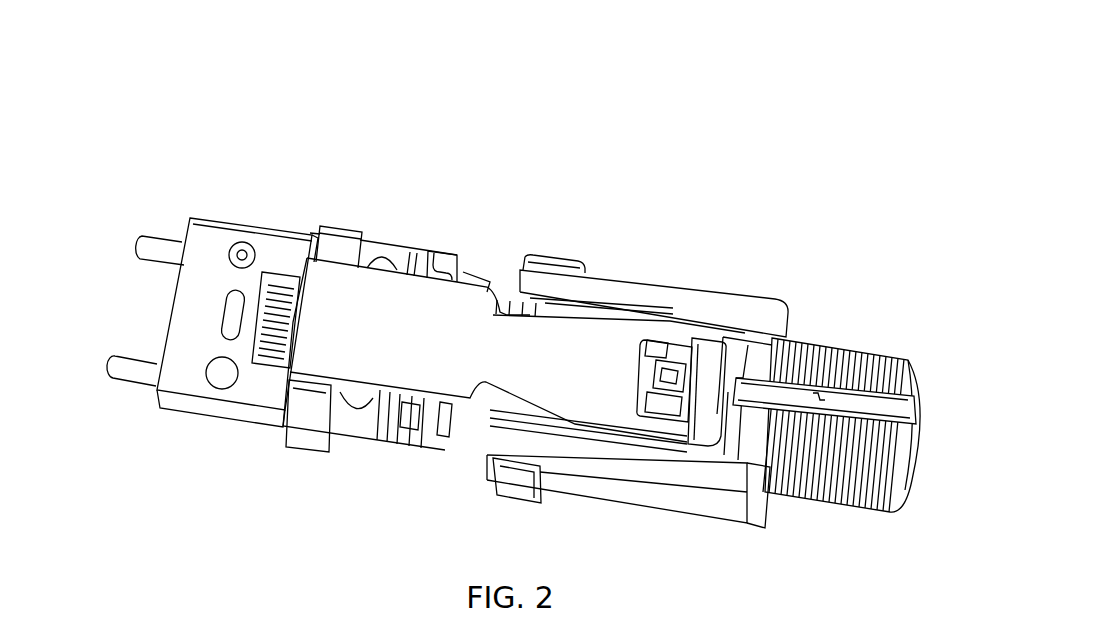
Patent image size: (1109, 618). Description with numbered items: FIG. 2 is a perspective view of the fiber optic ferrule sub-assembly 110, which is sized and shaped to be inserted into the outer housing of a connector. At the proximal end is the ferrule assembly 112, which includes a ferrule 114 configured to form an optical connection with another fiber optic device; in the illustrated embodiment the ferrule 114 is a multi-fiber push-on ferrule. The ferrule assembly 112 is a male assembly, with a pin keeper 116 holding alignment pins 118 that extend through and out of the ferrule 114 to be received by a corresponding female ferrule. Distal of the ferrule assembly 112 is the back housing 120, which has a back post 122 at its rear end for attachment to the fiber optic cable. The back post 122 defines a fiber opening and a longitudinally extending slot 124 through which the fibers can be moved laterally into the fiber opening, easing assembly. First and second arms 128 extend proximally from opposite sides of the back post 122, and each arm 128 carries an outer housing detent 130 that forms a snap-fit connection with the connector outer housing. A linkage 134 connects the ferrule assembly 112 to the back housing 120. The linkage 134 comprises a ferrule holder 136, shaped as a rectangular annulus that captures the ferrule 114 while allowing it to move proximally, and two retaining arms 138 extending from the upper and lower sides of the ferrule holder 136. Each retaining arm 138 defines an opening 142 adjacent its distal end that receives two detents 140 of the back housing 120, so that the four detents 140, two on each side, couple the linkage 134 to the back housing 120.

The fiber optic ferrule sub-assembly 110 is at (616, 74).
The ferrule assembly 112 is at (432, 197).
The ferrule 114 is at (214, 248).
The pin keeper 116 is at (463, 241).
The alignment pins 118 is at (135, 370).
The back housing 120 is at (693, 249).
The back post 122 is at (852, 363).
The slot 124 is at (866, 403).
The arms 128 is at (627, 290).
The outer housing detents 130 is at (568, 255).
The linkage 134 is at (405, 379).
The ferrule holder 136 is at (340, 240).
The retaining arms 138 is at (460, 342).
The detents 140 is at (683, 353).
The opening 142 is at (665, 377).